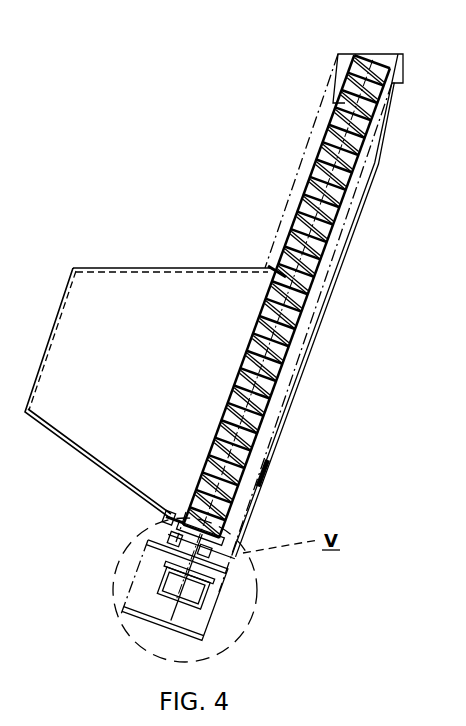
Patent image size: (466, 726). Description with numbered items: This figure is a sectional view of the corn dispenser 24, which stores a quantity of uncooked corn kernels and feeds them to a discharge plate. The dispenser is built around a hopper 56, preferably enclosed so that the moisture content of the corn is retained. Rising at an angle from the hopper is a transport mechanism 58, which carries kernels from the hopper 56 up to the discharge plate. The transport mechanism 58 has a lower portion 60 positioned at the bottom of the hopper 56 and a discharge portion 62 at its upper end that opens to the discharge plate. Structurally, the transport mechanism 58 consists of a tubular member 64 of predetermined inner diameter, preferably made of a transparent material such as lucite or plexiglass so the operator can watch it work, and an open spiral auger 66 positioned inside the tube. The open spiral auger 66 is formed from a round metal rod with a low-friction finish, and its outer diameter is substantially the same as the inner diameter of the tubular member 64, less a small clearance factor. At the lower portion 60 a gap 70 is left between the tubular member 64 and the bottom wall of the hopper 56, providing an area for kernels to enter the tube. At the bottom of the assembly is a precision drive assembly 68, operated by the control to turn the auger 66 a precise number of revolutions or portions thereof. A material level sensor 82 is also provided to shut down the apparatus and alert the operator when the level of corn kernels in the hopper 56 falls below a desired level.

The corn dispenser 24 is at (157, 262).
The hopper 56 is at (241, 268).
The transport mechanism 58 is at (302, 210).
The lower portion 60 is at (230, 521).
The discharge portion 62 is at (372, 64).
The tubular member 64 is at (318, 270).
The open spiral auger 66 is at (288, 348).
The precision drive assembly 68 is at (208, 598).
The gap 70 is at (188, 518).
The material level sensor 82 is at (270, 477).